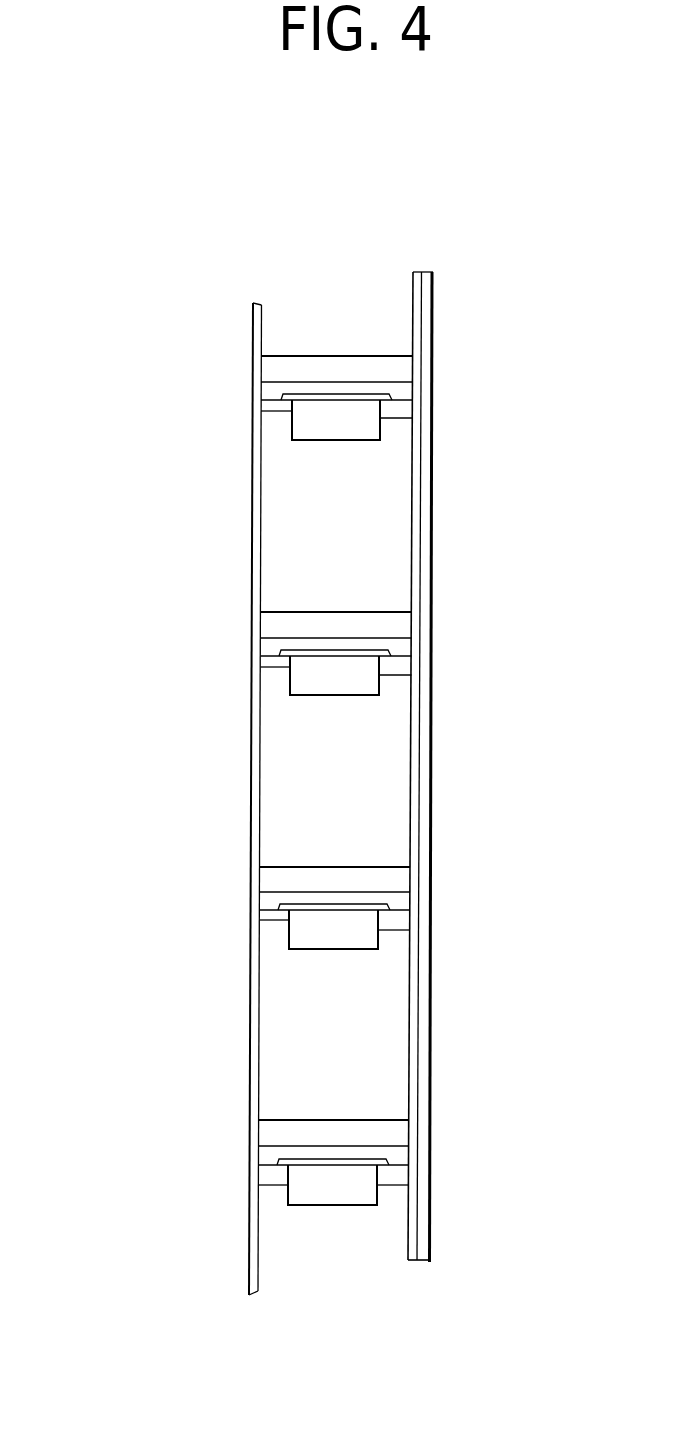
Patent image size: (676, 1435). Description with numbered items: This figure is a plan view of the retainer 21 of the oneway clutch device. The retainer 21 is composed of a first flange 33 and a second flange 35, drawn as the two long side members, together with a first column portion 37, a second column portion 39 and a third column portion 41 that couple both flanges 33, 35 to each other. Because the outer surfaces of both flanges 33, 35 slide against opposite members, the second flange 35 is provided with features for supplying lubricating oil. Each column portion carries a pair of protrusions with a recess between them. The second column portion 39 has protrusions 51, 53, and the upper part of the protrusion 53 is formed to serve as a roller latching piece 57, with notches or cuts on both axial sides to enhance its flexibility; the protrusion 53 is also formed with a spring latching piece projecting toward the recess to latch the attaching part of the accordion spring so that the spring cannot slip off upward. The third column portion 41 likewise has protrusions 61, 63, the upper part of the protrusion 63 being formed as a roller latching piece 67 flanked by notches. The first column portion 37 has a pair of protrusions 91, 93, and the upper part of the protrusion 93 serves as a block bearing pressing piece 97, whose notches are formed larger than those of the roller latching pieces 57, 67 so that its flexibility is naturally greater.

The retainer 21 is at (127, 342).
The first flange 33 is at (252, 775).
The second flange 35 is at (428, 760).
The first column portion 37 is at (400, 886).
The second column portion 39 is at (400, 634).
The third column portion 41 is at (406, 373).
The protrusion 51 is at (366, 615).
The protrusion 53 is at (398, 681).
The roller latching piece 57 is at (340, 688).
The protrusion 61 is at (383, 364).
The protrusion 63 is at (396, 427).
The roller latching piece 67 is at (335, 433).
The protrusion 91 is at (356, 878).
The protrusion 93 is at (396, 936).
The block bearing pressing piece 97 is at (340, 942).